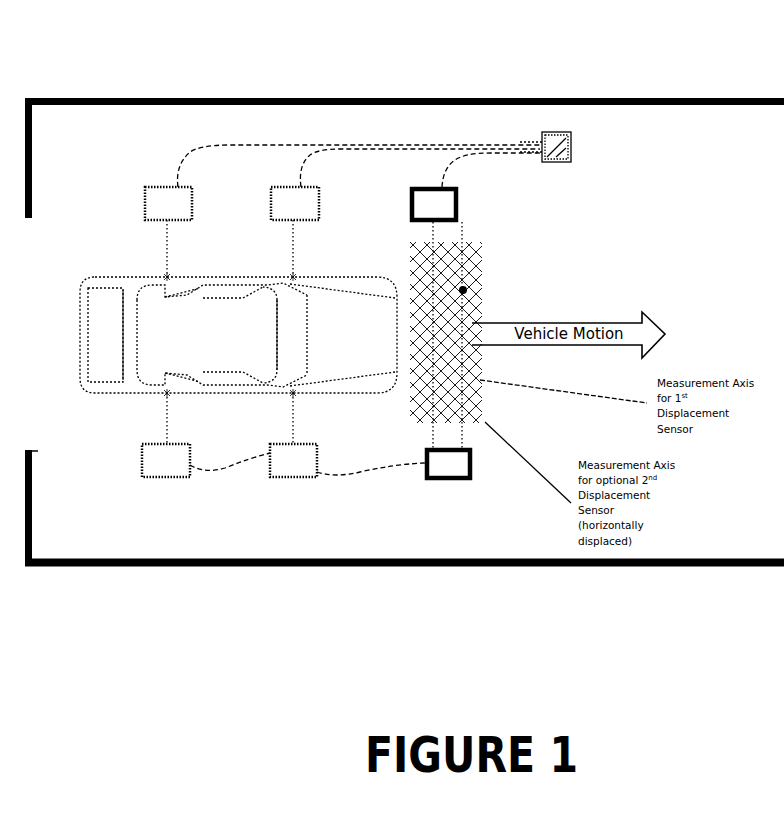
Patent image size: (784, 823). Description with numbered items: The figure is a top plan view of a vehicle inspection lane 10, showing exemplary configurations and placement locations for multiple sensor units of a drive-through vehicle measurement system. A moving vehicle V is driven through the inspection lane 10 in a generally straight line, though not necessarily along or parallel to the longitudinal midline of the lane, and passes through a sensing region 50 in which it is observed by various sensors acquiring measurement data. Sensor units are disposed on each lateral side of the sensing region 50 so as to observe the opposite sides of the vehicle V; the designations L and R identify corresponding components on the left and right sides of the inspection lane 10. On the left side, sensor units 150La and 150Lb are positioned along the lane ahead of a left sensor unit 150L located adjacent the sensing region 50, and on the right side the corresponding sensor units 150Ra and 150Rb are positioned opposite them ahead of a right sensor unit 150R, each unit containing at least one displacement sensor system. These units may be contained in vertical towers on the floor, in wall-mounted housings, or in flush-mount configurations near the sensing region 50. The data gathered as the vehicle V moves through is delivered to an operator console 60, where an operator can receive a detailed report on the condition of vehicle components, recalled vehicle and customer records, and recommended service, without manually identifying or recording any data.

The vehicle inspection lane 10 is at (616, 254).
The sensing region 50 is at (468, 286).
The operator console 60 is at (552, 131).
The left sensor unit 150La is at (145, 195).
The left sensor unit 150Lb is at (270, 197).
The left sensor unit 150L is at (442, 187).
The right sensor unit 150Ra is at (165, 478).
The right sensor unit 150Rb is at (290, 478).
The right sensor unit 150R is at (440, 482).
The vehicle V is at (203, 342).